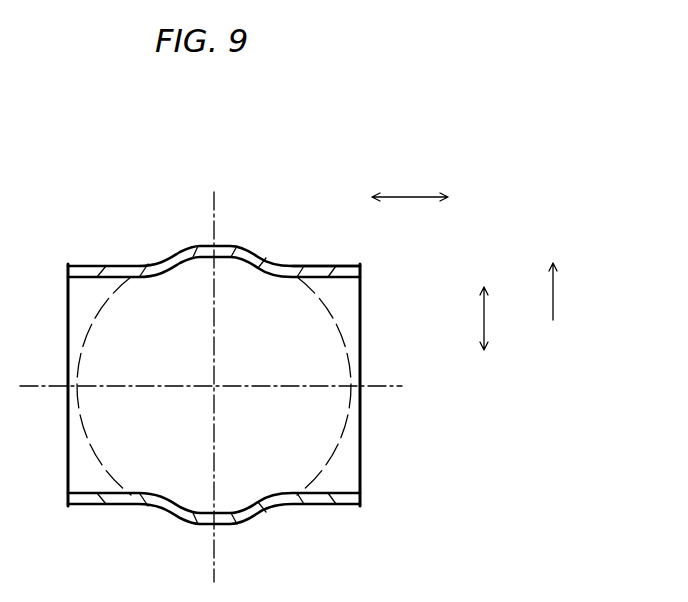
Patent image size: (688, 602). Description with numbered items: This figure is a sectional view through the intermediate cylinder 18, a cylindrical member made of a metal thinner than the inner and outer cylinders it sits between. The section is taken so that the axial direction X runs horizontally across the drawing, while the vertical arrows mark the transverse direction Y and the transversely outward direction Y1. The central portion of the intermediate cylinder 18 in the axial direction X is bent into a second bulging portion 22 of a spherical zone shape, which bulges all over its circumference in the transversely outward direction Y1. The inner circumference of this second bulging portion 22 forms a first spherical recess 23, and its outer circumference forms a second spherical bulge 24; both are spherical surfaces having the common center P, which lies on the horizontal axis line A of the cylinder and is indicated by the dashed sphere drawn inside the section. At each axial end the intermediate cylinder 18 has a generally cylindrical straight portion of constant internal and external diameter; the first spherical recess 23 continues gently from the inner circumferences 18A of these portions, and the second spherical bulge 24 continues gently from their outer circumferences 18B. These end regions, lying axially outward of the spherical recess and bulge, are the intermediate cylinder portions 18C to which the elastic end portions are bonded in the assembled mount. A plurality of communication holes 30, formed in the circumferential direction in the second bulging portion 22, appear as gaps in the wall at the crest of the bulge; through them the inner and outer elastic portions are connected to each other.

The intermediate cylinder 18 is at (229, 144).
The inner circumferences of the generally cylindrical portions 18A is at (112, 278).
The outer circumferences of the generally cylindrical portions 18B is at (115, 266).
The intermediate cylinder portions 18C is at (120, 505).
The second bulging portion 22 is at (237, 524).
The first spherical recess 23 is at (291, 264).
The second spherical bulge 24 is at (269, 270).
The communication holes 30 is at (221, 247).
The common center P is at (219, 382).
The axis A is at (390, 389).
The axial direction X is at (410, 187).
The Y direction Y is at (492, 318).
The transversely outward direction Y1 is at (566, 291).